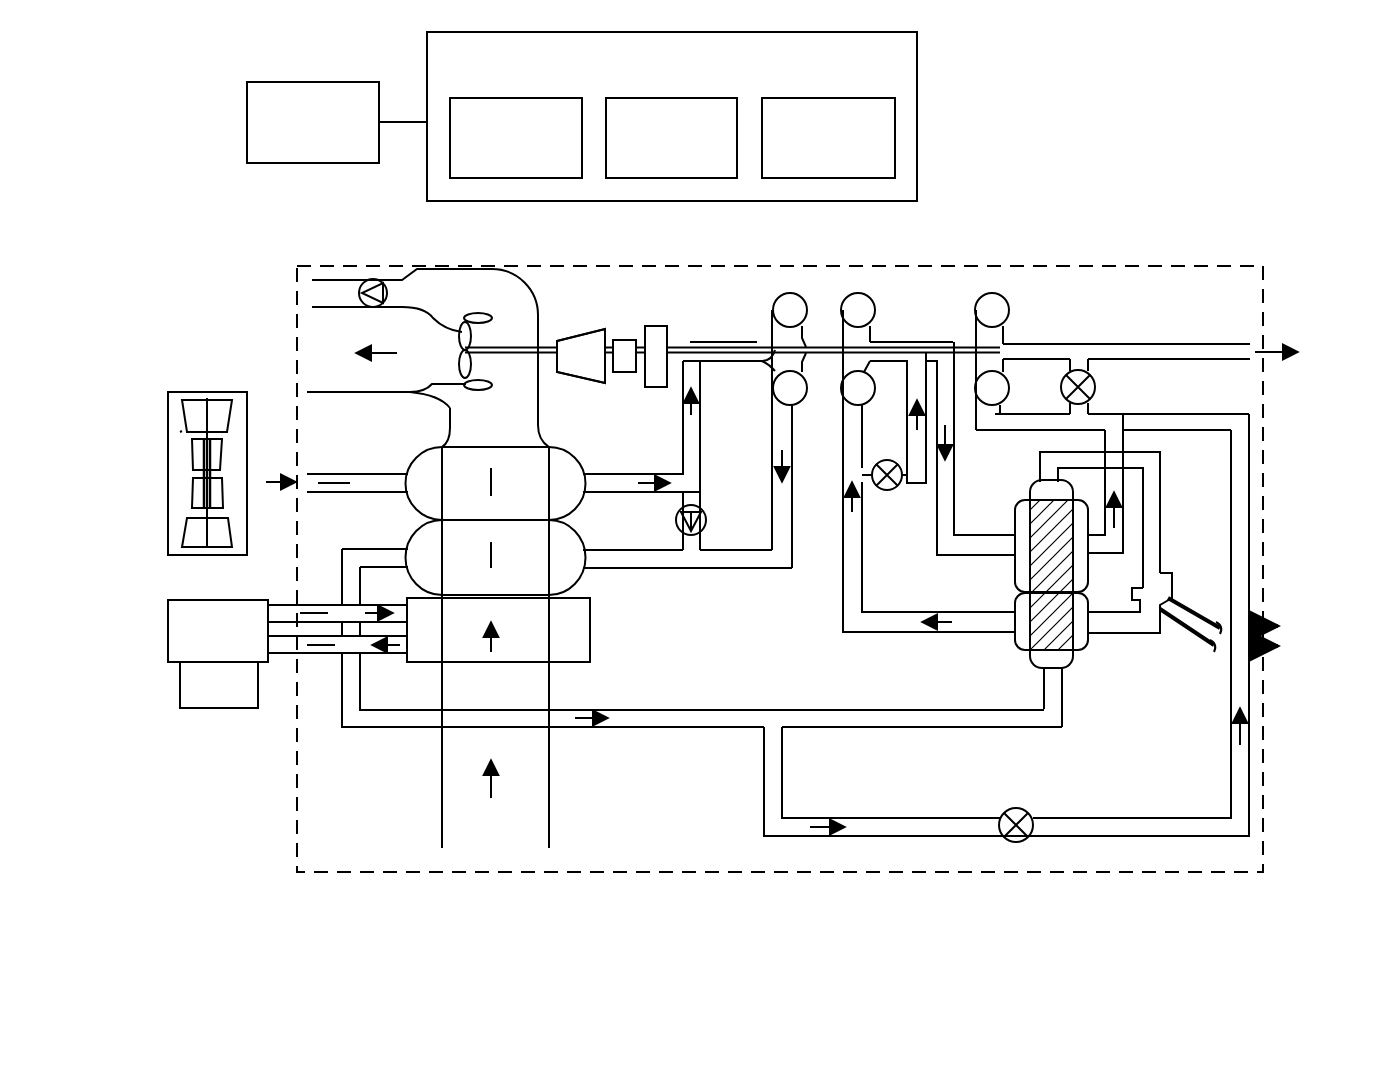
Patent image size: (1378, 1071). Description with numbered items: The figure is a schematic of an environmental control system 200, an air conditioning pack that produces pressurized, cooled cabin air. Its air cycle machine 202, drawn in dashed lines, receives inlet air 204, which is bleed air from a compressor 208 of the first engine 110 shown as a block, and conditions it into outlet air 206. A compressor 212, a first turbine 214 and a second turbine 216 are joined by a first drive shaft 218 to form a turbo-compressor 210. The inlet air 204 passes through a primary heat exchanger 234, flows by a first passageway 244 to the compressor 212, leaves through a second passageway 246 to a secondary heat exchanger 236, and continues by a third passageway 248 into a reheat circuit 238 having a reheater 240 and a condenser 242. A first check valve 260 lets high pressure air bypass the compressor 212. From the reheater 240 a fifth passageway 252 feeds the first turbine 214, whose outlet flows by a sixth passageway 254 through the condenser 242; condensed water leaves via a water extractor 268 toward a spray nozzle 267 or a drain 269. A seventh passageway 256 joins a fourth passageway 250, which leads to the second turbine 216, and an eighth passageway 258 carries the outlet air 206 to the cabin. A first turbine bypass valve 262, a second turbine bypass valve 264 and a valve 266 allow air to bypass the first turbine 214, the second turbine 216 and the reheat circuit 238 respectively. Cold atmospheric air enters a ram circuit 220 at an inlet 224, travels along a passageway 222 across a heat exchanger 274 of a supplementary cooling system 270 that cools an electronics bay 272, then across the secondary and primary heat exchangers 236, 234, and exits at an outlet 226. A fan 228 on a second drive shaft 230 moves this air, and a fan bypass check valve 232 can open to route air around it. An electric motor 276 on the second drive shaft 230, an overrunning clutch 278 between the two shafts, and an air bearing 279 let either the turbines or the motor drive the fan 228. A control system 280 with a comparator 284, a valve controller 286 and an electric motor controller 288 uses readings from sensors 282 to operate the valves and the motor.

The first engine 110 is at (230, 392).
The environmental control system 200 is at (204, 226).
The air cycle machine 202 is at (1205, 266).
The inlet air 204 is at (290, 478).
The outlet air 206 is at (1270, 350).
The compressor 208 is at (180, 432).
The turbo-compressor 210 is at (906, 270).
The compressor 212 is at (775, 300).
The first turbine 214 is at (855, 300).
The second turbine 216 is at (996, 300).
The first drive shaft 218 is at (792, 346).
The ram circuit 220 is at (400, 784).
The passageway 222 is at (551, 790).
The inlet 224 is at (483, 858).
The outlet 226 is at (310, 326).
The fan 228 is at (458, 340).
The second drive shaft 230 is at (551, 347).
The fan bypass check valve 232 is at (374, 279).
The primary heat exchanger 234 is at (410, 452).
The secondary heat exchanger 236 is at (406, 526).
The reheat circuit 238 is at (826, 612).
The reheater 240 is at (1090, 656).
The condenser 242 is at (1016, 496).
The first passageway 244 is at (680, 440).
The second passageway 246 is at (770, 482).
The third passageway 248 is at (700, 712).
The fourth passageway 250 is at (906, 822).
The fifth passageway 252 is at (875, 634).
The sixth passageway 254 is at (957, 560).
The seventh passageway 256 is at (1146, 454).
The eighth passageway 258 is at (1161, 344).
The first check valve 260 is at (706, 514).
The first turbine bypass valve 262 is at (890, 490).
The second turbine bypass valve 264 is at (1096, 388).
The valve 266 is at (1008, 811).
The spray nozzle 267 is at (1286, 624).
The water extractor 268 is at (1173, 590).
The drain 269 is at (1287, 650).
The supplementary cooling system 270 is at (232, 600).
The electronics bay 272 is at (210, 708).
The heat exchanger 274 is at (590, 640).
The electric motor 276 is at (590, 340).
The overrunning clutch 278 is at (658, 326).
The air bearing 279 is at (628, 340).
The control system 280 is at (492, 32).
The sensors 282 is at (315, 82).
The comparator 284 is at (518, 98).
The valve controller 286 is at (672, 98).
The electric motor controller 288 is at (830, 98).